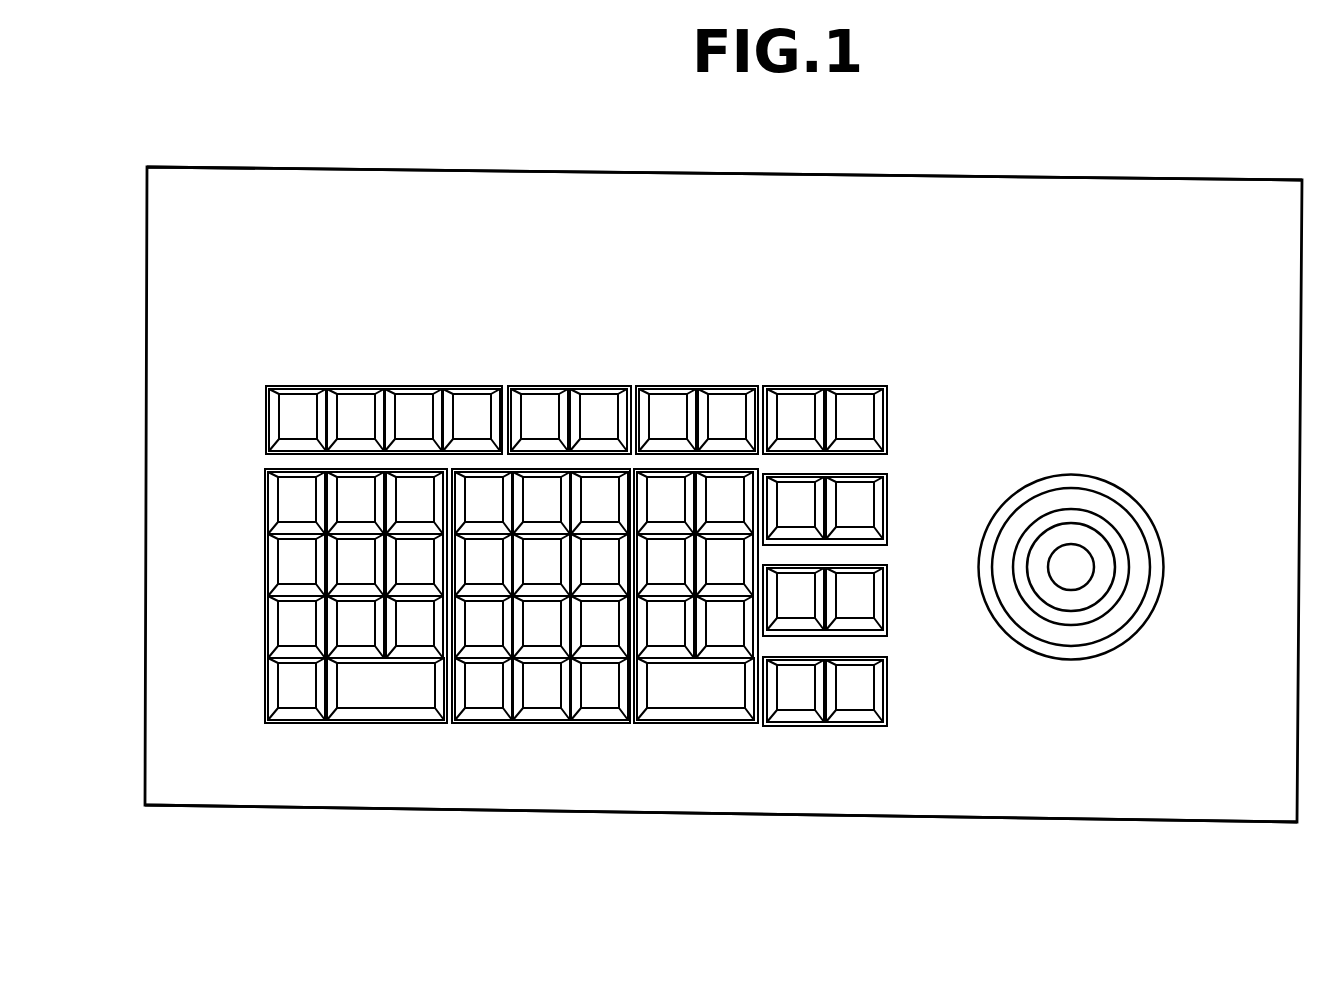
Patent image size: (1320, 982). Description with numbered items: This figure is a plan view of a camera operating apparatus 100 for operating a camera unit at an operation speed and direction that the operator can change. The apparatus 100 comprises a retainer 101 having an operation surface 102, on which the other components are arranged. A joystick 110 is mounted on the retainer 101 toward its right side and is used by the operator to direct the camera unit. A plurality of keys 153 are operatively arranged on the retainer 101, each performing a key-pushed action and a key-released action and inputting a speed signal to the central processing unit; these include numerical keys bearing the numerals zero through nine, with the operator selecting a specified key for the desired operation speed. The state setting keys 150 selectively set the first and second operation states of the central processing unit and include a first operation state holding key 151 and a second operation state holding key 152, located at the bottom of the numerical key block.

The camera operating apparatus 100 is at (603, 114).
The retainer 101 is at (1123, 210).
The operation surface 102 is at (1022, 785).
The joystick 110 is at (1075, 553).
The state setting keys 150 is at (572, 743).
The first operation state holding key 151 is at (550, 693).
The second operation state holding key 152 is at (603, 697).
The keys 153 is at (452, 728).